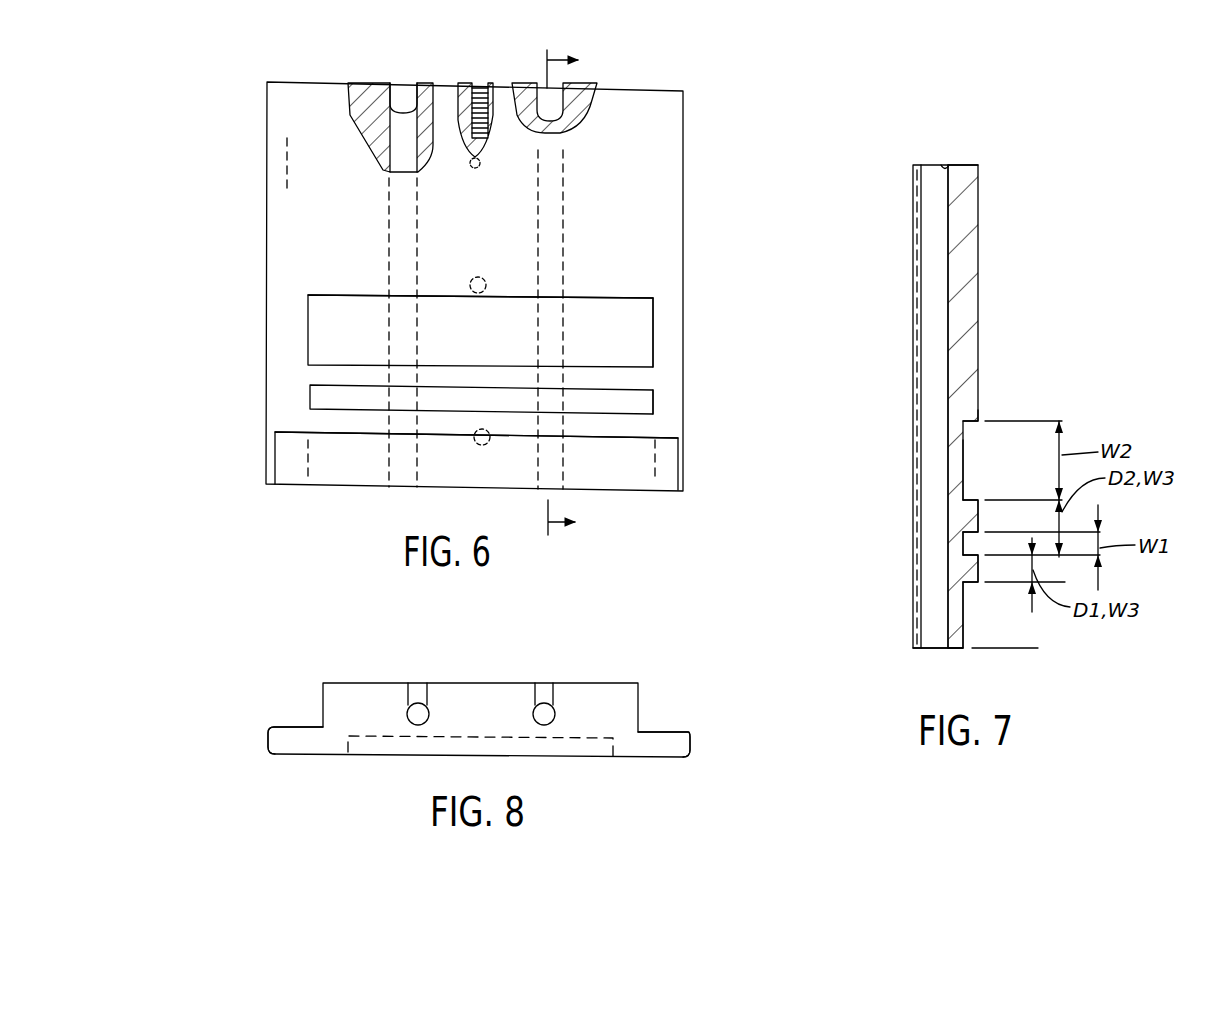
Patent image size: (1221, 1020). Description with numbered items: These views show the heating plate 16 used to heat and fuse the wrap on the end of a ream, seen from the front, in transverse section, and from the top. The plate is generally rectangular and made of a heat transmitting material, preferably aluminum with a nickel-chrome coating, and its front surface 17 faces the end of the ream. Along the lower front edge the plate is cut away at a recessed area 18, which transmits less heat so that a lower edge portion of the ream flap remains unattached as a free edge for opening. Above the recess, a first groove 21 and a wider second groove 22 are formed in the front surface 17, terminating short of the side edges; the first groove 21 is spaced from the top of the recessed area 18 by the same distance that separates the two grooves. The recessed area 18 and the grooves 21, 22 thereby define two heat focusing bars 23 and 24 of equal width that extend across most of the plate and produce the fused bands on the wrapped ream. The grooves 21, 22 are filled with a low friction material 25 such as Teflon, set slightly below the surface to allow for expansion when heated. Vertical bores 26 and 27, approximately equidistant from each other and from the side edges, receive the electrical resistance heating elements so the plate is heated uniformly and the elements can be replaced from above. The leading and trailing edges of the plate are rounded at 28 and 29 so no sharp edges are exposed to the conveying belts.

In FIG. 6, the heating plate 16 is at (719, 111).
In FIG. 7, the heating plate 16 is at (1014, 199).
In FIG. 8, the heating plate 16 is at (353, 776).
In FIG. 6, the front surface 17 is at (592, 163).
In FIG. 7, the front surface 17 is at (978, 270).
In FIG. 8, the front surface 17 is at (630, 760).
In FIG. 6, the recessed area 18 is at (633, 477).
In FIG. 7, the recessed area 18 is at (964, 632).
In FIG. 6, the first groove 21 is at (335, 387).
In FIG. 7, the first groove 21 is at (962, 546).
In FIG. 6, the second groove 22 is at (333, 297).
In FIG. 7, the second groove 22 is at (963, 470).
In FIG. 6, the heat focusing bar 23 is at (450, 423).
In FIG. 7, the heat focusing bar 23 is at (980, 572).
In FIG. 6, the heat focusing bar 24 is at (484, 370).
In FIG. 7, the heat focusing bar 24 is at (981, 512).
In FIG. 6, the low friction material 25 is at (647, 393).
In FIG. 7, the low friction material 25 is at (988, 421).
In FIG. 6, the bore 26 is at (419, 229).
In FIG. 8, the bore 26 is at (417, 703).
In FIG. 6, the bore 27 is at (559, 236).
In FIG. 7, the bore 27 is at (943, 166).
In FIG. 8, the bore 27 is at (550, 712).
In FIG. 8, the rounded leading edge 28 is at (272, 745).
In FIG. 8, the rounded trailing edge 29 is at (686, 751).